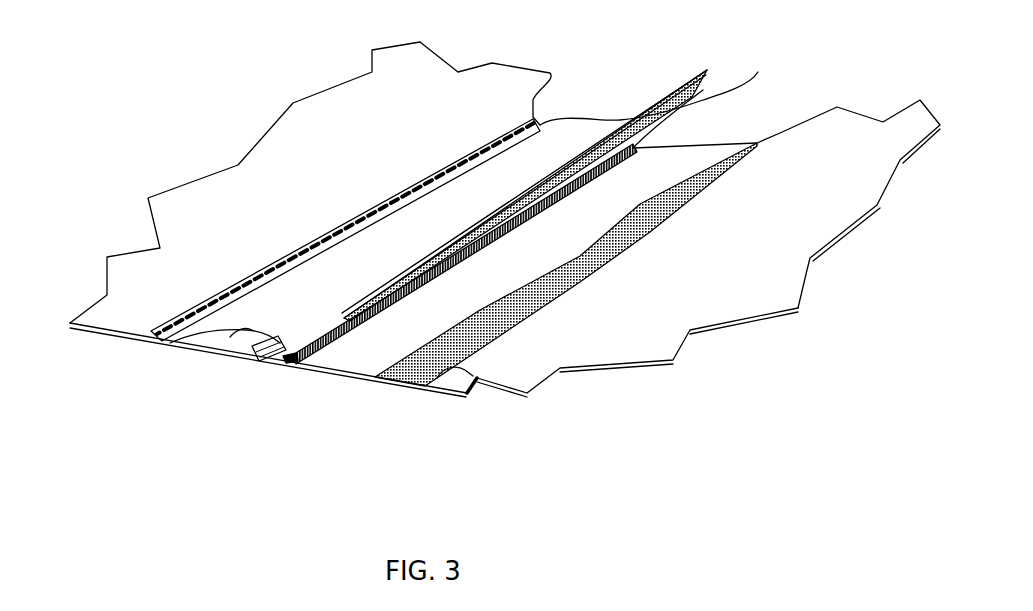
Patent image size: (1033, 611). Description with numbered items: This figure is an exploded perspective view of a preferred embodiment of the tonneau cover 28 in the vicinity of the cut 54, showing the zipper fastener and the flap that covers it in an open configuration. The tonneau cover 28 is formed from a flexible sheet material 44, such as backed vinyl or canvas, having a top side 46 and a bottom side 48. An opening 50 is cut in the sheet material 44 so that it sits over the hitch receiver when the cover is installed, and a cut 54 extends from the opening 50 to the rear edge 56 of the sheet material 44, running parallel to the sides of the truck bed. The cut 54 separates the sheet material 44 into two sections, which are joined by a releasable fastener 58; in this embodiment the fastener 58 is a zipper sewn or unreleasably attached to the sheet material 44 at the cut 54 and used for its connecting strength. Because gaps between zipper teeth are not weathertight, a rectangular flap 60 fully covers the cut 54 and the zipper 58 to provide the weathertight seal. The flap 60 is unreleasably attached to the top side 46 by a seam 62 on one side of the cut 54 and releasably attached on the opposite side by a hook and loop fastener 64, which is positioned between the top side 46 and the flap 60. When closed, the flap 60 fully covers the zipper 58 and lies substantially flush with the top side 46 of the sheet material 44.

The tonneau cover 28 is at (420, 480).
The flexible sheet material 44 is at (505, 182).
The top side 46 is at (478, 382).
The bottom side 48 is at (449, 392).
The opening 50 is at (685, 38).
The cut 54 is at (278, 364).
The rear edge 56 is at (134, 335).
The releasable fastener 58 is at (257, 358).
The rectangular flap 60 is at (758, 72).
The seam 62 is at (315, 242).
The hook and loop fastener 64 is at (522, 195).